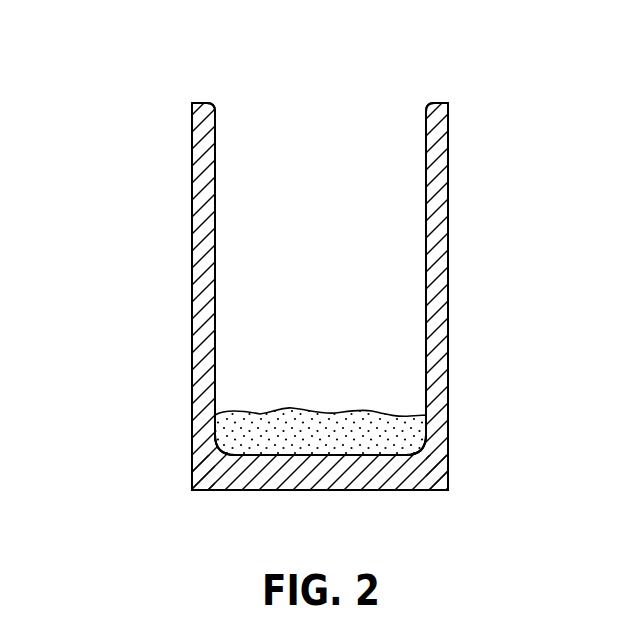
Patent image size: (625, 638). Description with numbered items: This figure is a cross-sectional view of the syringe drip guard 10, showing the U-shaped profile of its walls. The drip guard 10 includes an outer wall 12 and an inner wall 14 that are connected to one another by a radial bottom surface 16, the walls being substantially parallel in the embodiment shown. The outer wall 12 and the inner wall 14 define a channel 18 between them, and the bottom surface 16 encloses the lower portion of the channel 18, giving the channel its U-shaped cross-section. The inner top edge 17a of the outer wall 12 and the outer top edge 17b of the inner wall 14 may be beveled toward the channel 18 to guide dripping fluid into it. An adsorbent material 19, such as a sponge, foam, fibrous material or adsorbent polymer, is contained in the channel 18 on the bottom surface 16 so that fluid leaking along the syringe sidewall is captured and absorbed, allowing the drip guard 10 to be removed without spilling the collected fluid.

The drip guard 10 is at (100, 236).
The outer wall 12 is at (192, 338).
The inner wall 14 is at (427, 413).
The bottom surface 16 is at (362, 478).
The inner top edge 17a is at (202, 103).
The outer top edge 17b is at (438, 103).
The channel 18 is at (337, 270).
The adsorbent material 19 is at (397, 437).